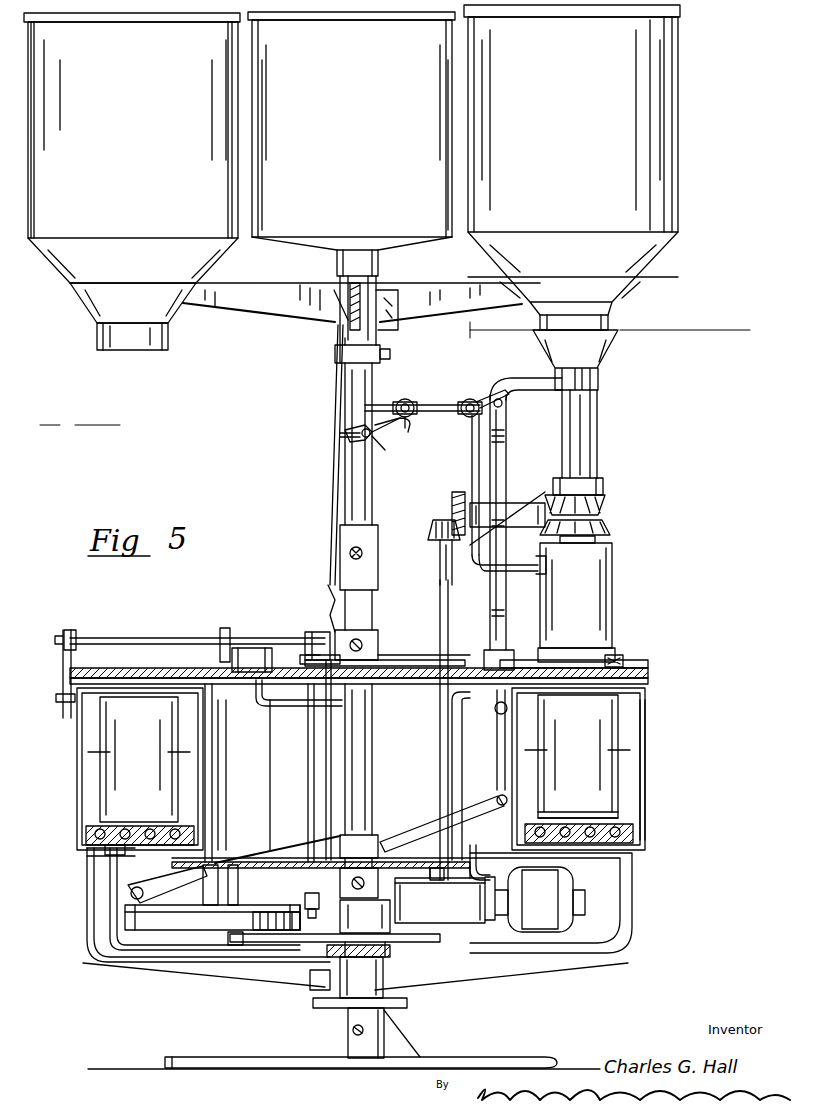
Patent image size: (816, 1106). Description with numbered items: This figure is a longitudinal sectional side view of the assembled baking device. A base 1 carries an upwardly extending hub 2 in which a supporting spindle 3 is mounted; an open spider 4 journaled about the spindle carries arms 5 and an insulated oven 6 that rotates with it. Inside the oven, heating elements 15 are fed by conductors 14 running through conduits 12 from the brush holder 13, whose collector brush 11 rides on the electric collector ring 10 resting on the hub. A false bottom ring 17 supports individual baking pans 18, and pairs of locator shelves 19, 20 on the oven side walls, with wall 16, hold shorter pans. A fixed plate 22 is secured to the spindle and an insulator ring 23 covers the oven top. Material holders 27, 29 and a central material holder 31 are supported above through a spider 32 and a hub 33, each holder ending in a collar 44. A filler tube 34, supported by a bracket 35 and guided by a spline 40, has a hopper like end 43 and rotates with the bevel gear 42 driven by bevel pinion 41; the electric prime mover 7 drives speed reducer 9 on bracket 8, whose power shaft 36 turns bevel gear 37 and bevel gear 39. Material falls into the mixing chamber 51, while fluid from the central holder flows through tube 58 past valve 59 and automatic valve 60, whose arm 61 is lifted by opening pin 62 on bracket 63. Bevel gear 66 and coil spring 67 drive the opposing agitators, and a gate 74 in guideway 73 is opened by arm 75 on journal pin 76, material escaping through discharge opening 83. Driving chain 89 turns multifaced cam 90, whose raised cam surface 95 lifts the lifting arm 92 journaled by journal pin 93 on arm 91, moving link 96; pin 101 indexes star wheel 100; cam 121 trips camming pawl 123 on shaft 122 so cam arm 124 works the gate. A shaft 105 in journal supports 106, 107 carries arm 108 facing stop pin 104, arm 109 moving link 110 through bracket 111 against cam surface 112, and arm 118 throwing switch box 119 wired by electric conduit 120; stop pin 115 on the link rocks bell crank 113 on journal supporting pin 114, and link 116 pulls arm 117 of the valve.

The base 1 is at (290, 1070).
The hub 2 is at (735, 333).
The supporting spindle 3 is at (360, 498).
The open spider 4 is at (520, 972).
The arms 5 is at (633, 912).
The insulated oven 6 is at (80, 905).
The electric prime mover 7 is at (550, 890).
The bracket 8 is at (190, 940).
The speed reducer 9 is at (458, 923).
The electric collector ring 10 is at (338, 1068).
The collector brush 11 is at (340, 1000).
The conduits 12 is at (205, 942).
The brush holder 13 is at (320, 1006).
The conductors 14 is at (86, 840).
The heating elements 15 is at (95, 830).
The cup side wall 16 is at (645, 735).
The false bottom ring 17 is at (620, 812).
The individual baking pans 18 is at (610, 728).
The locator shelf 19 is at (640, 752).
The locator shelf 20 is at (540, 748).
The fixed plate 22 is at (648, 668).
The insulator ring 23 is at (650, 678).
The material holder 27 is at (668, 190).
The material holder 29 is at (60, 262).
The central material holder 31 is at (280, 240).
The spider 32 is at (252, 322).
The hub 33 is at (378, 268).
The filler tube 34 is at (600, 410).
The bracket 35 is at (398, 545).
The power shaft 36 is at (445, 604).
The bevel gear 37 is at (438, 520).
The bevel gear 39 is at (458, 490).
The spline 40 is at (582, 448).
The bevel pinion 41 is at (525, 527).
The bevel gear 42 is at (606, 500).
The hopper like end 43 is at (600, 373).
The collars 44 is at (110, 342).
The mixing chamber 51 is at (610, 580).
The tube 58 is at (442, 405).
The valve 59 is at (407, 398).
The automatic valve 60 is at (470, 398).
The arm 61 is at (490, 393).
The opening pin 62 is at (508, 403).
The bracket 63 is at (506, 444).
The bevel gear 66 is at (610, 526).
The coil spring 67 is at (598, 540).
The guideway 73 is at (625, 658).
The gate 74 is at (568, 660).
The arm 75 is at (410, 658).
The journal pin 76 is at (388, 655).
The discharge opening 83 is at (430, 875).
The driving chain 89 is at (240, 858).
The multifaced cam 90 is at (107, 962).
The arm 91 is at (135, 930).
The lifting arm 92 is at (430, 822).
The journal pin 93 is at (128, 893).
The raised cam surface 95 is at (110, 950).
The link 96 is at (455, 755).
The star wheel 100 is at (312, 985).
The pin 101 is at (232, 945).
The stop pin 104 is at (56, 700).
The shaft 105 is at (110, 638).
The journal support 106 is at (78, 628).
The journal support 107 is at (326, 600).
The arm 108 is at (63, 660).
The arm 109 is at (312, 630).
The link 110 is at (338, 395).
The bracket 111 is at (340, 360).
The cam surface 112 is at (340, 312).
The bell crank 113 is at (360, 444).
The journal supporting pin 114 is at (340, 435).
The stop pin 115 is at (350, 440).
The link 116 is at (384, 438).
The arm 117 is at (412, 424).
The arm 118 is at (228, 630).
The switch box 119 is at (245, 660).
The electric conduit 120 is at (282, 706).
The cam 121 is at (235, 948).
The shaft 122 is at (310, 798).
The camming pawl 123 is at (305, 905).
The cam arm 124 is at (326, 700).